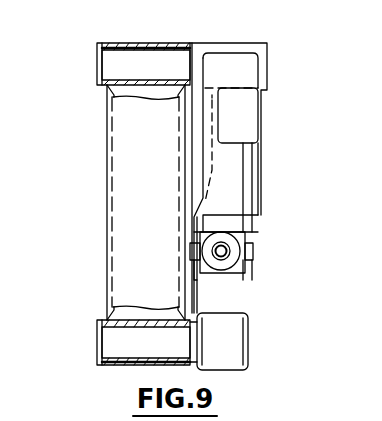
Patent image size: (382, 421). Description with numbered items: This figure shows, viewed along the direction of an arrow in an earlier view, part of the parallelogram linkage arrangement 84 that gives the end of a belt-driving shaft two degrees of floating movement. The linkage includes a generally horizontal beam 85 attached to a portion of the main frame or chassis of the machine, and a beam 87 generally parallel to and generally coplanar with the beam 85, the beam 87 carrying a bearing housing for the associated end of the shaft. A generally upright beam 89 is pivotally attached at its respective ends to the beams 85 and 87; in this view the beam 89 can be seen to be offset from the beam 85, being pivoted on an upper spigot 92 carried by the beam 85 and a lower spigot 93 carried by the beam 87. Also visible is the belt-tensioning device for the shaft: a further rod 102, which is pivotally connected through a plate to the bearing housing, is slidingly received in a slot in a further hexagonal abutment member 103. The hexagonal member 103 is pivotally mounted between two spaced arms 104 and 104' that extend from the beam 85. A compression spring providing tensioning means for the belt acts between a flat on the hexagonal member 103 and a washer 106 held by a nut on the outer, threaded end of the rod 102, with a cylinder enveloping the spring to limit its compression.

The parallelogram linkage arrangement 84 is at (277, 70).
The generally horizontal beam 85 is at (250, 125).
The beam 87 is at (228, 317).
The generally upright beam 89 is at (128, 208).
The upper spigot 92 is at (127, 62).
The lower spigot 93 is at (113, 342).
The further rod 102 is at (229, 251).
The further hexagonal abutment member 103 is at (232, 274).
The spaced arm 104 is at (189, 253).
The spaced arm 104' is at (289, 187).
The washer 106 is at (242, 237).